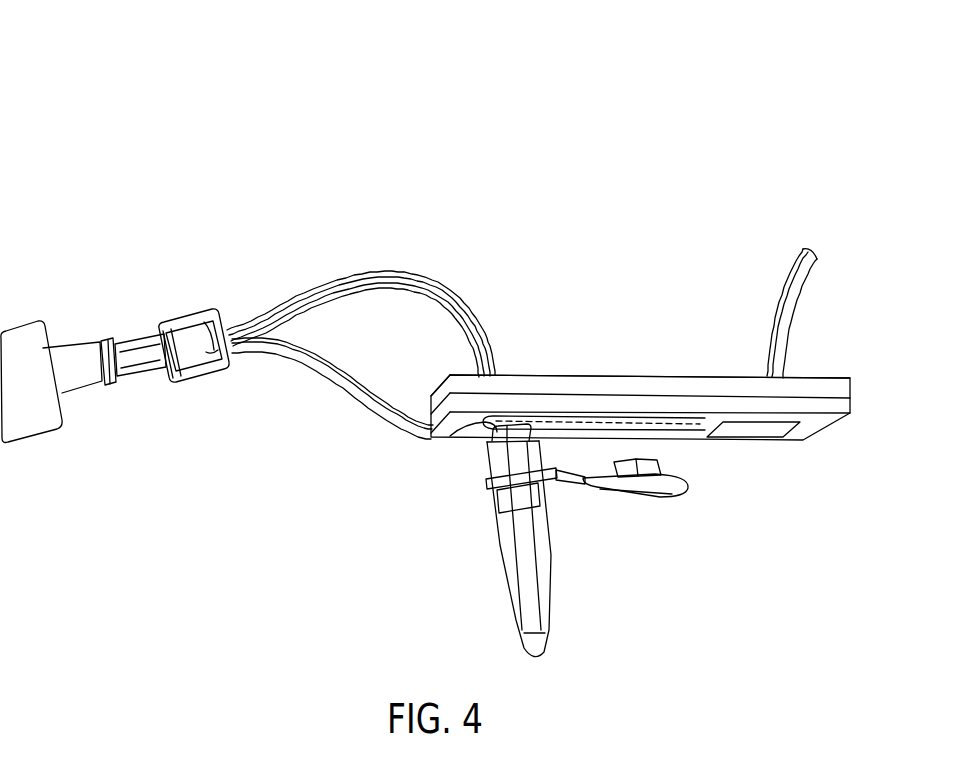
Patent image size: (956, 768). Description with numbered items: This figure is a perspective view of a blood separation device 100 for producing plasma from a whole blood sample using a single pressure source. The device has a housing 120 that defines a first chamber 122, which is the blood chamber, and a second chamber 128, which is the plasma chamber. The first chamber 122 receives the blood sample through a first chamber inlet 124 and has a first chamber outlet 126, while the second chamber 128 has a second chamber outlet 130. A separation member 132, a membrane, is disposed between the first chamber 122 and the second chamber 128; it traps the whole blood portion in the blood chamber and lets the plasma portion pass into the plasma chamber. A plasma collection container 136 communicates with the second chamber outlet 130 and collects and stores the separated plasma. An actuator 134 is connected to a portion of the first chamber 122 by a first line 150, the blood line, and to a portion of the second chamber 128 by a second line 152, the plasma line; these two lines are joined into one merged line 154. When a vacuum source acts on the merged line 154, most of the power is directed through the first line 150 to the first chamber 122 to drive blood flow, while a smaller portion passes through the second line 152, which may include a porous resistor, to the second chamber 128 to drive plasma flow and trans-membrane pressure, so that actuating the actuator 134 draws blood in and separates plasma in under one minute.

The blood separation device 100 is at (112, 92).
The housing 120 is at (810, 431).
The first chamber 122 is at (651, 380).
The first chamber inlet 124 is at (817, 219).
The first chamber outlet 126 is at (513, 349).
The second chamber 128 is at (738, 440).
The second chamber outlet 130 is at (463, 457).
The separation member 132 is at (688, 428).
The actuator 134 is at (26, 335).
The plasma collection container 136 is at (510, 578).
The first line 150 is at (427, 286).
The second line 152 is at (352, 386).
The merged line 154 is at (175, 342).